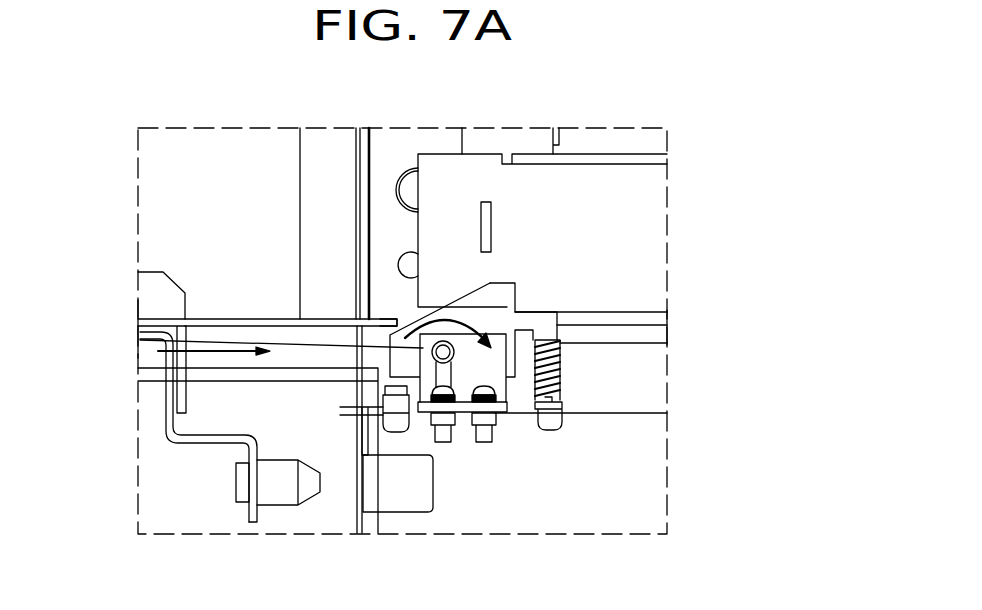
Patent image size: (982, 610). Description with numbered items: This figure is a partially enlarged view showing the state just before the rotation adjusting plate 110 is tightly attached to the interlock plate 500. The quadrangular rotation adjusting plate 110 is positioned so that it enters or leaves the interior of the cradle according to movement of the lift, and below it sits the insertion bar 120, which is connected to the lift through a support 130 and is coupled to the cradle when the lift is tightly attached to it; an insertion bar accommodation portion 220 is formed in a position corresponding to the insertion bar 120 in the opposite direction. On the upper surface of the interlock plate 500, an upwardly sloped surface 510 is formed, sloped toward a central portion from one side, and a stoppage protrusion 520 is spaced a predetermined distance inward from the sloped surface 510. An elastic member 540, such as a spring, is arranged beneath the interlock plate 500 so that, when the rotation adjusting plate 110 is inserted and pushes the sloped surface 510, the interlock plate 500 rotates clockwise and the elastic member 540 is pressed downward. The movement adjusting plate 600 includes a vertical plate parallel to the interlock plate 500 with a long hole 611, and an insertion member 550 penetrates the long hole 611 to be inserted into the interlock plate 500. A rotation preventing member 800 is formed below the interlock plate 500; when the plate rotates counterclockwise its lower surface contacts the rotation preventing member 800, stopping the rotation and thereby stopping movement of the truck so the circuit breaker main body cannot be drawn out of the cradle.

The rotation adjusting plate 110 is at (225, 318).
The insertion bar 120 is at (277, 488).
The support 130 is at (158, 405).
The insertion bar accommodation portion 220 is at (422, 500).
The interlock plate 500 is at (507, 307).
The sloped surface 510 is at (490, 285).
The stoppage protrusion 520 is at (518, 293).
The elastic member 540 is at (508, 413).
The insertion member 550 is at (435, 363).
The movement adjusting plate 600 is at (140, 338).
The long hole 611 is at (450, 380).
The rotation preventing member 800 is at (362, 390).